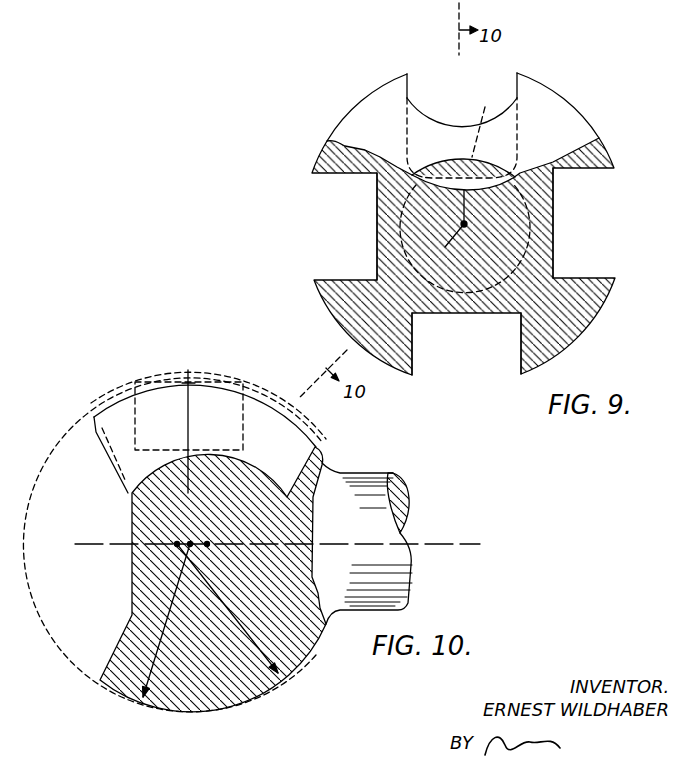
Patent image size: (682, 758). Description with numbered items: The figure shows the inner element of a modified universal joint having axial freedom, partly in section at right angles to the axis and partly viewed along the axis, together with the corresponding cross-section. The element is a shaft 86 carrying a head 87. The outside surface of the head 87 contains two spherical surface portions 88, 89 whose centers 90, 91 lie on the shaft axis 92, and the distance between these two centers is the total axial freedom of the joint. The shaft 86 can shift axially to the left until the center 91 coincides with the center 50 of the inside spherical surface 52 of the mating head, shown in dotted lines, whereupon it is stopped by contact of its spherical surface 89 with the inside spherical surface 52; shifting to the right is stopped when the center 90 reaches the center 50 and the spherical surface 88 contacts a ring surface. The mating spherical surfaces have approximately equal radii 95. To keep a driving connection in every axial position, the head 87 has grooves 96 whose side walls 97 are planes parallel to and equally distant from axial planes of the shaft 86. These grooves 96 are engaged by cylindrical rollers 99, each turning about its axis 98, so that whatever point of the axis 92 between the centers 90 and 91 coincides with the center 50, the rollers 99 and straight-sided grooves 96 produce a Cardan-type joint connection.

In FIG. 10, the center 50 is at (190, 544).
In FIG. 10, the inside spherical surface 52 is at (86, 676).
In FIG. 9, the shaft 86 is at (465, 191).
In FIG. 10, the shaft 86 is at (352, 487).
In FIG. 9, the head 87 is at (565, 125).
In FIG. 10, the head 87 is at (313, 640).
In FIG. 10, the spherical surface portion 88 is at (262, 693).
In FIG. 10, the spherical surface portion 89 is at (130, 700).
In FIG. 10, the center 90 is at (177, 544).
In FIG. 10, the center 91 is at (207, 544).
In FIG. 9, the shaft axis 92 is at (464, 224).
In FIG. 10, the shaft axis 92 is at (428, 538).
In FIG. 10, the radii 95 is at (170, 630).
In FIG. 9, the grooves 96 is at (467, 83).
In FIG. 10, the grooves 96 is at (270, 435).
In FIG. 9, the side walls 97 is at (409, 91).
In FIG. 10, the axis 98 is at (188, 397).
In FIG. 10, the cylindrical rollers 99 is at (130, 390).